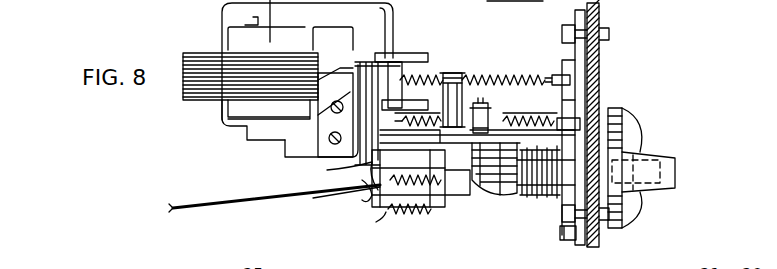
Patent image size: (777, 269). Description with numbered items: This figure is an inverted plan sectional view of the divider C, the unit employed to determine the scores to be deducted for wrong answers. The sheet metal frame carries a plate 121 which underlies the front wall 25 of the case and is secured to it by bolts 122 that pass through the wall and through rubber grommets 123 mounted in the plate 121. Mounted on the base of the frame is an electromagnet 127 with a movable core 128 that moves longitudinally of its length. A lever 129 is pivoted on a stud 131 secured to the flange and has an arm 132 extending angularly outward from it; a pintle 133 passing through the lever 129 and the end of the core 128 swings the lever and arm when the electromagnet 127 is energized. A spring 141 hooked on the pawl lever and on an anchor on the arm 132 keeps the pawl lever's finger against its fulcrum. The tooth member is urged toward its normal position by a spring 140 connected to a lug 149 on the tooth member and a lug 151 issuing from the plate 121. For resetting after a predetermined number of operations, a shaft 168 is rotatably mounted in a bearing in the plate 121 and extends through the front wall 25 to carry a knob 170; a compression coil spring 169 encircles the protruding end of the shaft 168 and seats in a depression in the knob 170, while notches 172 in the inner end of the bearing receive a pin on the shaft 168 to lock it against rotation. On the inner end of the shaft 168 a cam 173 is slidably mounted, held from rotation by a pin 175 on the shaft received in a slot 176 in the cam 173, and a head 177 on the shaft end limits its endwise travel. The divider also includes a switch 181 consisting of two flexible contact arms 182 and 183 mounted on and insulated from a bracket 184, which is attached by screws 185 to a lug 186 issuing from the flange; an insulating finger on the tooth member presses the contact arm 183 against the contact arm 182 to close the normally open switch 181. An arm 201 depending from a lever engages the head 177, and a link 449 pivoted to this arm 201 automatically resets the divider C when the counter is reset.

The electromagnet 127 is at (232, 42).
The lug 186 is at (323, 83).
The screws 185 is at (337, 100).
The bracket 184 is at (293, 127).
The switch 181 is at (320, 128).
The contact arm 183 is at (373, 162).
The contact arm 182 is at (330, 196).
The link 449 is at (247, 199).
The lug 149 is at (372, 210).
The movable core 128 is at (425, 60).
The pintle 133 is at (408, 53).
The arm 132 is at (494, 82).
The stud 131 is at (456, 73).
The lever 129 is at (457, 130).
The spring 141 is at (540, 76).
The spring 140 is at (543, 120).
The cam 173 is at (468, 213).
The slot 176 is at (503, 205).
The pin 175 is at (523, 198).
The arm 201 is at (445, 212).
The head 177 is at (402, 222).
The divider C is at (374, 224).
The lug 151 is at (598, 100).
The plate 121 is at (592, 15).
The front wall 25 is at (637, 52).
The bolts 122 is at (605, 33).
The rubber grommets 123 is at (590, 233).
The notches 172 is at (562, 226).
The knob 170 is at (635, 133).
The compression coil spring 169 is at (625, 122).
The shaft 168 is at (675, 162).